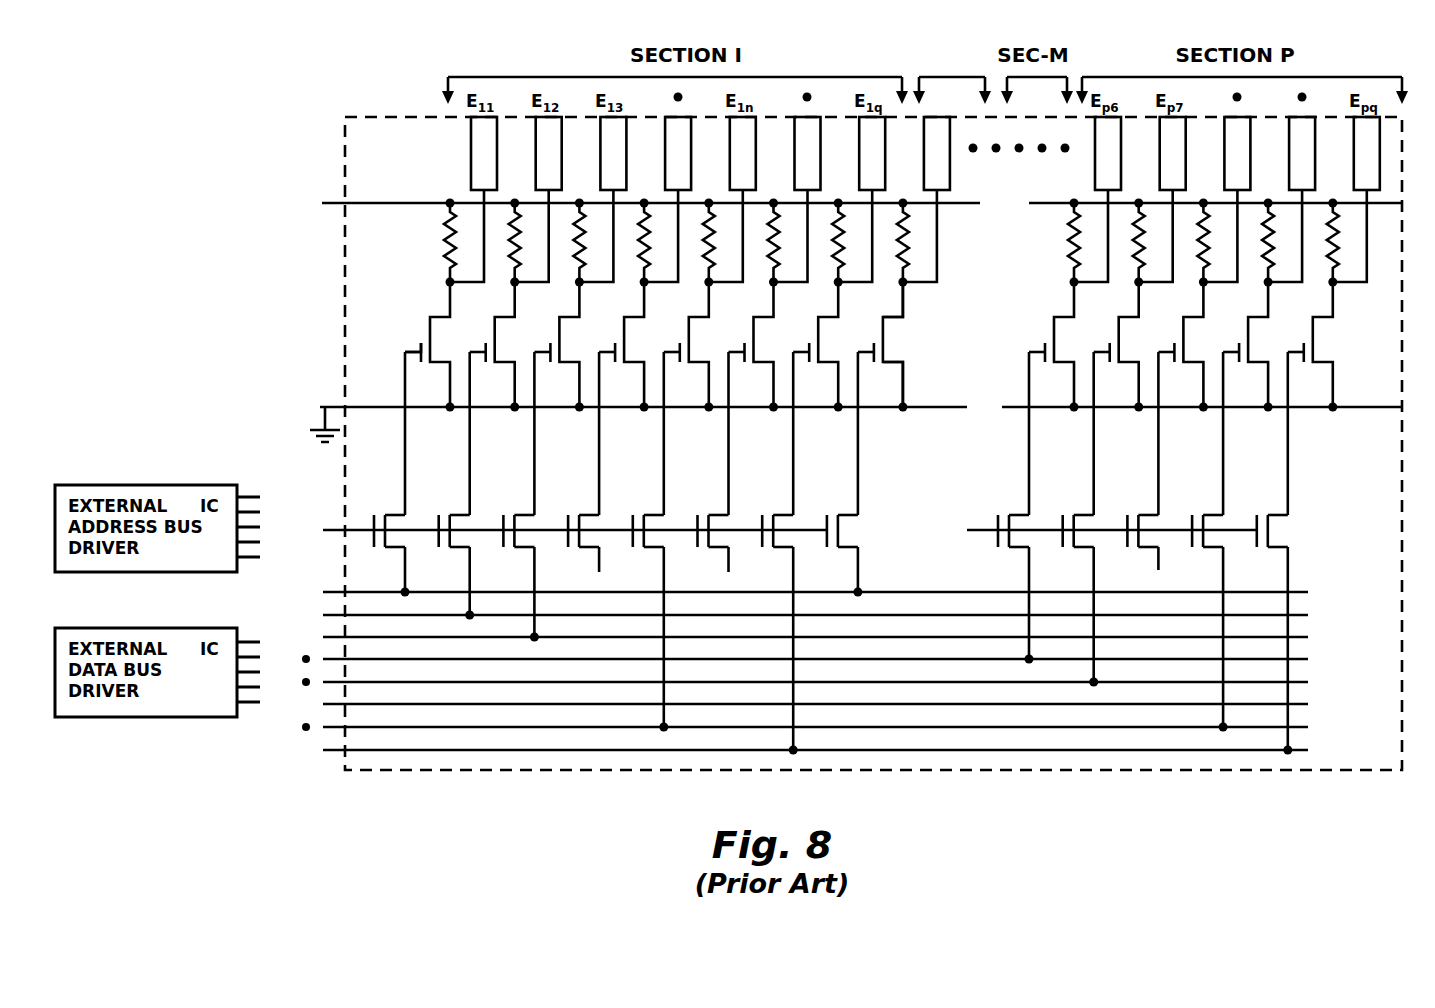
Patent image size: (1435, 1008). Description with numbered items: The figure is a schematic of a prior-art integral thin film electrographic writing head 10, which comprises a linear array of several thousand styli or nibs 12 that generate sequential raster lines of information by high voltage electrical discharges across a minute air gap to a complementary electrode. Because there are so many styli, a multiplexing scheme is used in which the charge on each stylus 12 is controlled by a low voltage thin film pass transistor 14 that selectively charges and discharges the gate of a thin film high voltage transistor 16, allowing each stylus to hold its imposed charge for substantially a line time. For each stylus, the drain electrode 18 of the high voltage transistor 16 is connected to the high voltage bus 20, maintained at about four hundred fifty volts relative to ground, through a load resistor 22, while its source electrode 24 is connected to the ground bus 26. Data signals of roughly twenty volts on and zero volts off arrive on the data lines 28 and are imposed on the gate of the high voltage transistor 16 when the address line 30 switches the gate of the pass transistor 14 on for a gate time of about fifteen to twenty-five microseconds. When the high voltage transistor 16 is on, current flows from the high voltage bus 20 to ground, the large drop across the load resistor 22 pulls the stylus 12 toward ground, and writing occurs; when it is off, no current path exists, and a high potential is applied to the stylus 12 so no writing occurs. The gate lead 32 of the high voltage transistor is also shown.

The electrographic writing head 10 is at (355, 110).
The styli or nibs 12 is at (471, 166).
The low voltage thin film pass transistor 14 is at (495, 494).
The thin film high voltage transistor 16 is at (546, 331).
The drain electrode 18 is at (884, 323).
The high voltage bus 20 is at (326, 203).
The load resistor 22 is at (450, 258).
The source electrode 24 is at (884, 350).
The ground bus 26 is at (323, 407).
The data lines 28 is at (437, 592).
The address line 30 is at (606, 527).
The gate 32 is at (404, 353).